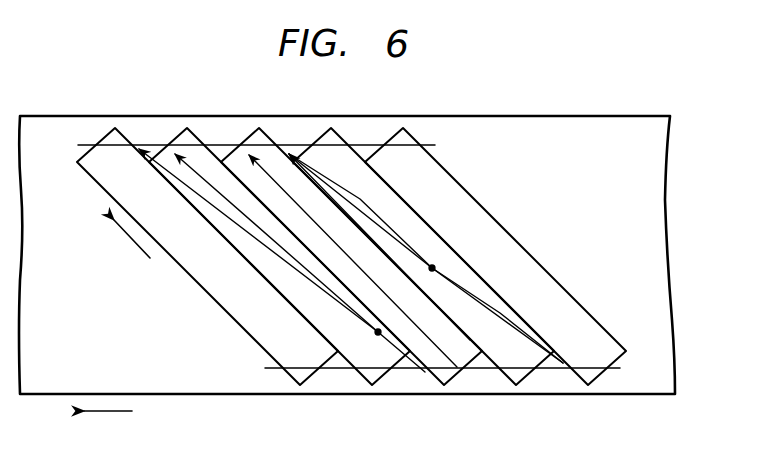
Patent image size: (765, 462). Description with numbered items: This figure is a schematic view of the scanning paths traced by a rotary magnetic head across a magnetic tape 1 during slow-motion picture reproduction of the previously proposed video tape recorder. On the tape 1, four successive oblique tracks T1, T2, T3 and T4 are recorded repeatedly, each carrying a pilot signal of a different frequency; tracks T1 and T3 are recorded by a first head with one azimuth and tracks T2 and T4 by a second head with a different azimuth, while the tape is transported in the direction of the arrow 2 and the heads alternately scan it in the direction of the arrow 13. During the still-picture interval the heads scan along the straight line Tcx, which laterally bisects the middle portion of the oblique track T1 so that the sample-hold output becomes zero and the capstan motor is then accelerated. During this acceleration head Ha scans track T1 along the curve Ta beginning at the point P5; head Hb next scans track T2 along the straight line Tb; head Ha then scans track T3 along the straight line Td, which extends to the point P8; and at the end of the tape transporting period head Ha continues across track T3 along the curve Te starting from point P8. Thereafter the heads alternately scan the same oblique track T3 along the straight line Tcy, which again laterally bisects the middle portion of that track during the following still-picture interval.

The magnetic tape 1 is at (177, 397).
The arrow indicating tape transport direction 2 is at (115, 412).
The arrow indicating head scanning direction 13 is at (137, 245).
The oblique track T1 is at (372, 387).
The oblique track T2 is at (259, 131).
The oblique track T3 is at (515, 387).
The oblique track T4 is at (117, 131).
The curve representing scanning path of head Ha Ta is at (238, 215).
The straight line representing scanning path of head Hb Tb is at (352, 262).
The straight line representing scanning path during still-picture reproduction Tcx is at (187, 190).
The straight line representing scanning path during still-picture reproduction Tcy is at (508, 318).
The straight line representing scanning path of head Ha Td is at (475, 300).
The curve representing scanning path of head Ha Te is at (355, 197).
The starting point of curve Ta P5 is at (377, 334).
The end point of line Td and starting point of curve Te P8 is at (434, 267).